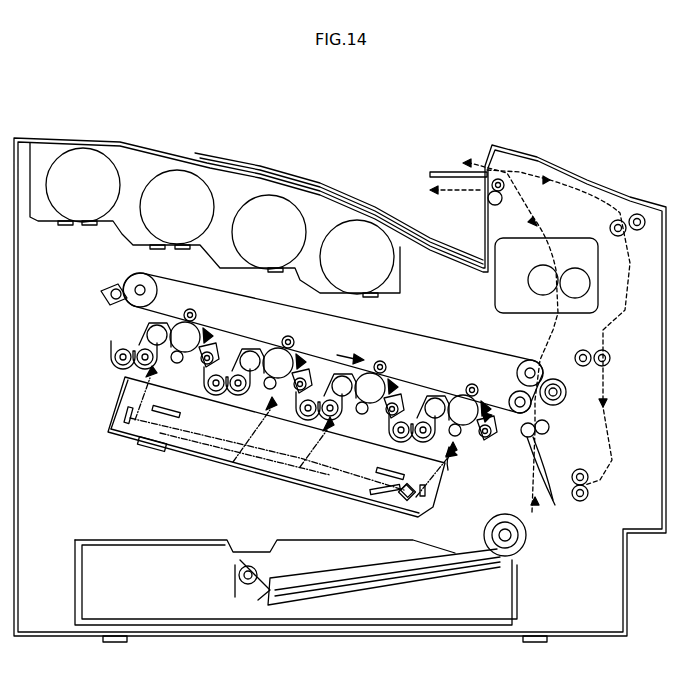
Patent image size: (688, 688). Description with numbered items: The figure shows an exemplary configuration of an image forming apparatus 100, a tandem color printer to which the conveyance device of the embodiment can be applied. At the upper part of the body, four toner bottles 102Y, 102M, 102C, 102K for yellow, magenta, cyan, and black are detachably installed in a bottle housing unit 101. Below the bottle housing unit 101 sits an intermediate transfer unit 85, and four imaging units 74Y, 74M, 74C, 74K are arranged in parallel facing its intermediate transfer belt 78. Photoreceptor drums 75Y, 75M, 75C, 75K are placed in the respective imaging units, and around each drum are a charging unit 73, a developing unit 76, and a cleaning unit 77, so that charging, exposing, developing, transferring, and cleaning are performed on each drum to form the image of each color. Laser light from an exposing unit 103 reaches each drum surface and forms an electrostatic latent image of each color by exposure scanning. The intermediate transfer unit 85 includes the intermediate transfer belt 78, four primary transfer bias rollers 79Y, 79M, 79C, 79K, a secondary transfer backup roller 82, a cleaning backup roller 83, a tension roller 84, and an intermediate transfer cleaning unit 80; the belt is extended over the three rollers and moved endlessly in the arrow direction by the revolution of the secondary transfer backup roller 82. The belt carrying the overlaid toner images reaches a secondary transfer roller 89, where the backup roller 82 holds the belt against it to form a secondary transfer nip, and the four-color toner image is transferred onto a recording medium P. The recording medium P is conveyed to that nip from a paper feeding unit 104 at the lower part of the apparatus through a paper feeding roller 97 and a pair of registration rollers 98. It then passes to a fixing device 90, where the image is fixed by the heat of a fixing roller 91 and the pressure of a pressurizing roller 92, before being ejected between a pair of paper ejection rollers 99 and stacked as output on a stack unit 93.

The image forming apparatus 100 is at (222, 149).
The stack unit 93 is at (345, 190).
The bottle housing unit 101 is at (120, 240).
The toner bottle 102Y is at (80, 212).
The toner bottle 102M is at (152, 192).
The toner bottle 102C is at (250, 208).
The toner bottle 102K is at (398, 270).
The intermediate transfer unit 85 is at (329, 343).
The intermediate transfer belt 78 is at (267, 302).
The cleaning backup roller 83 is at (140, 300).
The tension roller 84 is at (517, 373).
The secondary transfer backup roller 82 is at (519, 392).
The intermediate transfer cleaning unit 80 is at (104, 294).
The photoreceptor drum 75Y is at (187, 354).
The photoreceptor drum 75M is at (278, 348).
The photoreceptor drum 75C is at (375, 404).
The photoreceptor drum 75K is at (456, 397).
The primary transfer bias roller 79Y is at (198, 314).
The primary transfer bias roller 79M is at (296, 343).
The primary transfer bias roller 79C is at (386, 362).
The primary transfer bias roller 79K is at (472, 384).
The charging unit 73 is at (464, 456).
The cleaning unit 77 is at (492, 437).
The exposing unit 103 is at (158, 449).
The imaging unit 74Y is at (128, 385).
The imaging unit 74M is at (242, 460).
The imaging unit 74C is at (318, 468).
The imaging unit 74K is at (453, 462).
The developing unit 76 is at (400, 488).
The fixing device 90 is at (566, 238).
The fixing roller 91 is at (535, 270).
The pressurizing roller 92 is at (590, 283).
The pair of paper ejection rollers 99 is at (487, 188).
The secondary transfer roller 89 is at (558, 405).
The pair of registration rollers 98 is at (555, 501).
The paper feeding roller 97 is at (525, 551).
The paper feeding unit 104 is at (278, 580).
The recording medium P is at (333, 580).